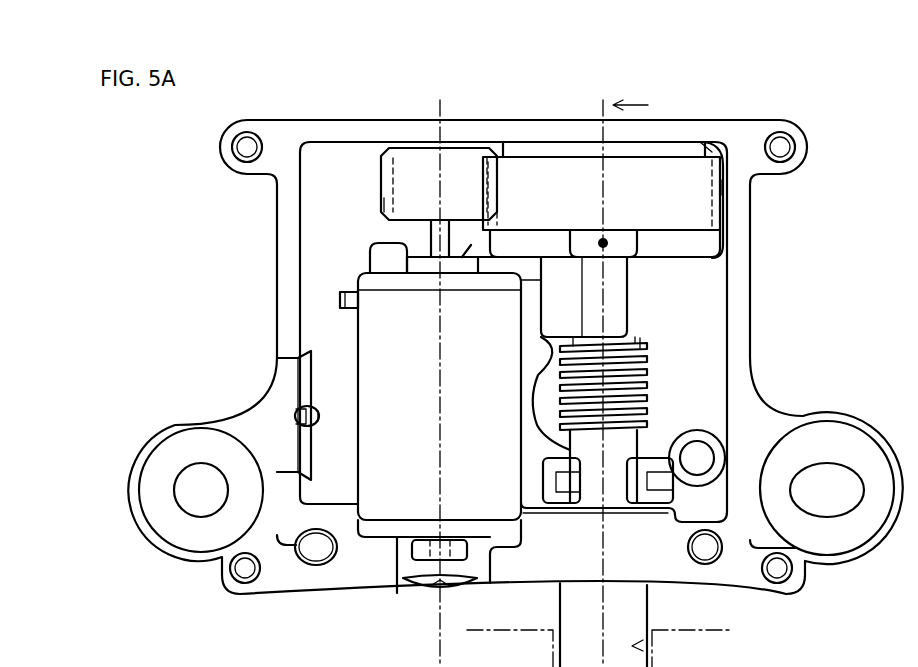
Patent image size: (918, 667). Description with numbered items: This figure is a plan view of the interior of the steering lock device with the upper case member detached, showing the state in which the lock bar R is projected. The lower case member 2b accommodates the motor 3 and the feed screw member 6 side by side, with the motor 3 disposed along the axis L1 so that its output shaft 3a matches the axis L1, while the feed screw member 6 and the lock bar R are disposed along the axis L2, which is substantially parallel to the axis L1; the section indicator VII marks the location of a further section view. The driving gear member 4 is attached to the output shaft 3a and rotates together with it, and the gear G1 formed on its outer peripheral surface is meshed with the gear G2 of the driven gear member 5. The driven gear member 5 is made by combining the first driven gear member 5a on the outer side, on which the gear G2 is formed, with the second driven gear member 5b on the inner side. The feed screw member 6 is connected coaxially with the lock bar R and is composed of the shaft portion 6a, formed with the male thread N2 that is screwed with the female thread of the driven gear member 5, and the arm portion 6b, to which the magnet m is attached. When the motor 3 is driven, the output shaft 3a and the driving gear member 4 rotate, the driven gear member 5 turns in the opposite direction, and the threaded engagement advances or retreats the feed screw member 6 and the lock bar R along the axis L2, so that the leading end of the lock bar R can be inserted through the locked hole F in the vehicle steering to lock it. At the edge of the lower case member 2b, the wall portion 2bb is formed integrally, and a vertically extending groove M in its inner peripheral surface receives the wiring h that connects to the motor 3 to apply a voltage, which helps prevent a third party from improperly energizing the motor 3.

The lower case member 2b is at (277, 280).
The wall portion 2bb is at (283, 375).
The motor 3 is at (363, 332).
The output shaft 3a is at (432, 235).
The driving gear member 4 is at (402, 150).
The driven gear member 5 is at (726, 214).
The first driven gear member 5a is at (535, 163).
The second driven gear member 5b is at (710, 247).
The feed screw member 6 is at (656, 362).
The shaft portion 6a is at (567, 367).
The arm portion 6b is at (680, 497).
The groove M is at (312, 410).
The wiring h is at (320, 413).
The magnet m is at (703, 447).
The gear G1 is at (390, 205).
The gear G2 is at (720, 187).
The male thread N2 is at (643, 343).
The axis L1 is at (441, 373).
The axis L2 is at (604, 373).
The section line VII is at (644, 106).
The lock bar R is at (573, 612).
The locked hole F is at (655, 657).